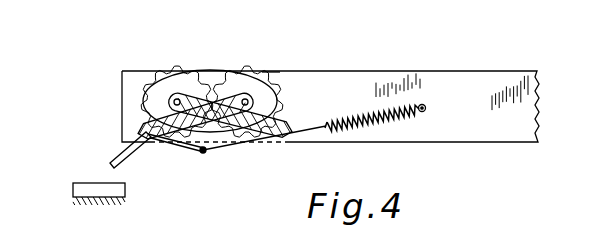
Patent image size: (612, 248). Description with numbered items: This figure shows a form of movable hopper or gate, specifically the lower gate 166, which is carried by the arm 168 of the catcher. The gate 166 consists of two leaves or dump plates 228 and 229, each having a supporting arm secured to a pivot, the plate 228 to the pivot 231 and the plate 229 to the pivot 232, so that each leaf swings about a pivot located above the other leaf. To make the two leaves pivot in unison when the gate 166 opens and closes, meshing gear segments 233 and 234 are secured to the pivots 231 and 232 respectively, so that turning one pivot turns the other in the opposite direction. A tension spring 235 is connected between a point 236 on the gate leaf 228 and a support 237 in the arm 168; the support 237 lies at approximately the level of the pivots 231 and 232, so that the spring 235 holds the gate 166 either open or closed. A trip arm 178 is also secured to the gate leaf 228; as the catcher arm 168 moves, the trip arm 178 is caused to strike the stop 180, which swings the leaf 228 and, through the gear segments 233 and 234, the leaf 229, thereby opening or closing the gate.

The arm 168 is at (387, 72).
The gear segment 234 is at (180, 52).
The gear segment 233 is at (242, 72).
The pivot 232 is at (200, 88).
The pivot 231 is at (260, 86).
The dump plate 229 is at (226, 146).
The dump plate 228 is at (185, 146).
The trip arm 178 is at (118, 152).
The stop 180 is at (83, 183).
The lower gate 166 is at (210, 156).
The point 236 is at (203, 153).
The tension spring 235 is at (374, 128).
The support 237 is at (428, 114).